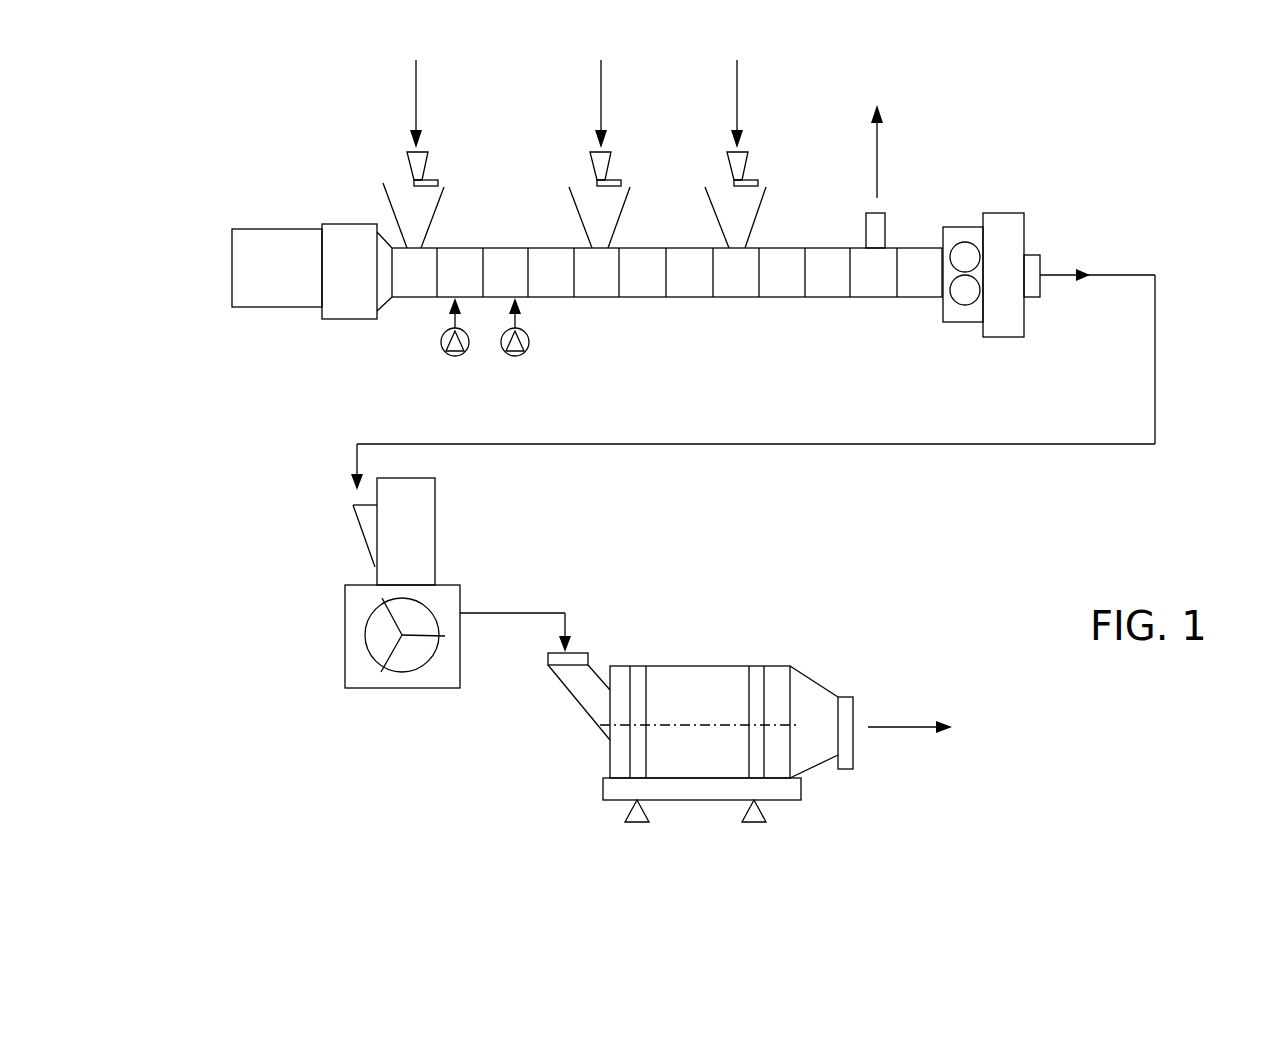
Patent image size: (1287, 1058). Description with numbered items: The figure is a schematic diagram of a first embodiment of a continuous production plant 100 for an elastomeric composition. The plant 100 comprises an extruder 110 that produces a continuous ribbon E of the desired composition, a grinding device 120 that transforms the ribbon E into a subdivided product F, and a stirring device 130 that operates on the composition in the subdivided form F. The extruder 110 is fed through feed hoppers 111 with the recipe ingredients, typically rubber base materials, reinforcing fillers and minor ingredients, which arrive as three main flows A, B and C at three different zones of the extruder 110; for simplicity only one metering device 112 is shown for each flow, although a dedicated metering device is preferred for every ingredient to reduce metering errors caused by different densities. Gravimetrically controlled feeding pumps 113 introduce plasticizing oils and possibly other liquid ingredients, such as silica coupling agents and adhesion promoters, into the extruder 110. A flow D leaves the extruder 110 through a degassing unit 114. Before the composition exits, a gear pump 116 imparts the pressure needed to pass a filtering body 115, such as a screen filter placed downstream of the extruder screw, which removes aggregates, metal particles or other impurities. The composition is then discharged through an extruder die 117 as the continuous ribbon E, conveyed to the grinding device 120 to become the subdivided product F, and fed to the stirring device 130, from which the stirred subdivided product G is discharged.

The continuous production plant 100 is at (255, 132).
The extruder 110 is at (650, 288).
The feed hoppers 111 is at (435, 210).
The metering device 112 is at (420, 168).
The gravimetrically controlled feeding pumps 113 is at (514, 357).
The degassing unit 114 is at (882, 230).
The filtering body 115 is at (1013, 327).
The gear pump 116 is at (957, 307).
The extruder die 117 is at (1034, 265).
The grinding device 120 is at (420, 680).
The stirring device 130 is at (622, 763).